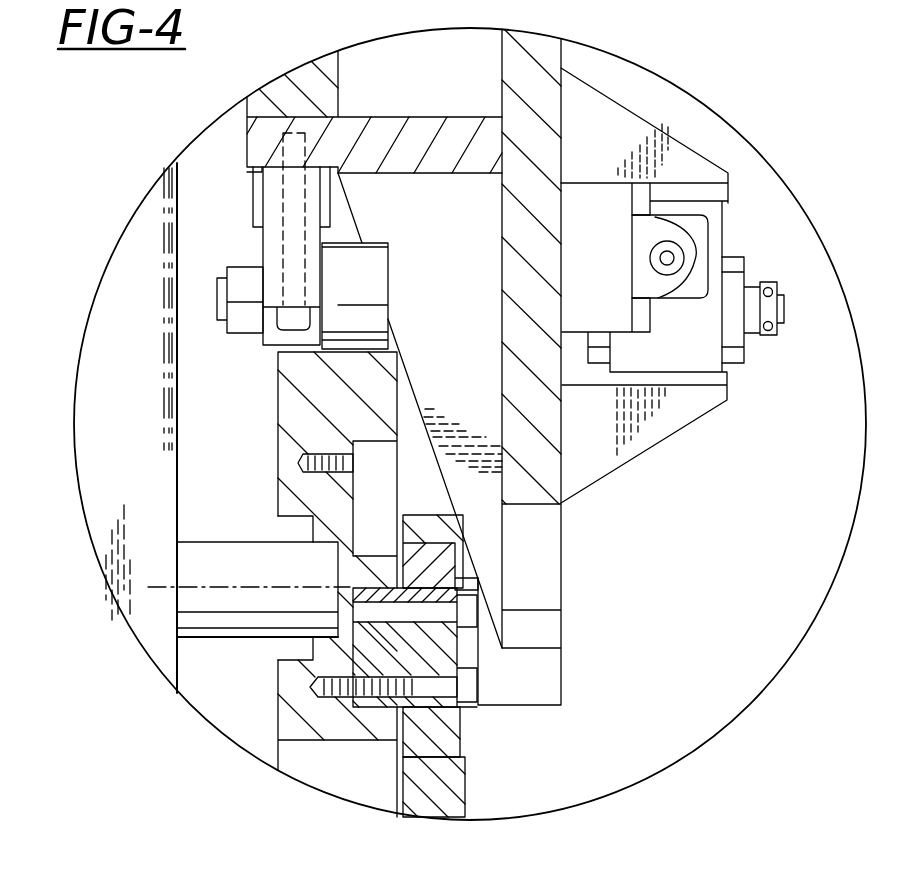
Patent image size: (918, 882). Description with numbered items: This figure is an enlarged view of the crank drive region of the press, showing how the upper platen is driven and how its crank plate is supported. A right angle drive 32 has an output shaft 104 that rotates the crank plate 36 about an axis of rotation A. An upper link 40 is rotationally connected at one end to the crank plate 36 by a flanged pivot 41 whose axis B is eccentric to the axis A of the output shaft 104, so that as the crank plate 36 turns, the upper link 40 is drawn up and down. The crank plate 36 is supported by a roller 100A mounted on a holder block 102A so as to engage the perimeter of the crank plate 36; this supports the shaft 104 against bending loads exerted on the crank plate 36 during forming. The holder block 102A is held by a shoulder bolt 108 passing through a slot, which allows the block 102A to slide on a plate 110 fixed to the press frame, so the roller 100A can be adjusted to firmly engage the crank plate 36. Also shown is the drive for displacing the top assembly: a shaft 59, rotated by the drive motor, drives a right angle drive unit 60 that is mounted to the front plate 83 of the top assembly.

The plate 110 is at (443, 118).
The front plate 83 is at (562, 65).
The shaft 59 is at (672, 258).
The right angle drive unit 60 is at (702, 352).
The shoulder bolt 108 is at (280, 192).
The right angle drive 32 is at (180, 231).
The holder block 102A is at (263, 246).
The roller 100A is at (376, 247).
The output shaft 104 is at (212, 548).
The axis of rotation A is at (262, 587).
The crank plate 36 is at (277, 717).
The flanged pivot 41 is at (480, 667).
The axis B is at (320, 648).
The upper link 40 is at (467, 796).